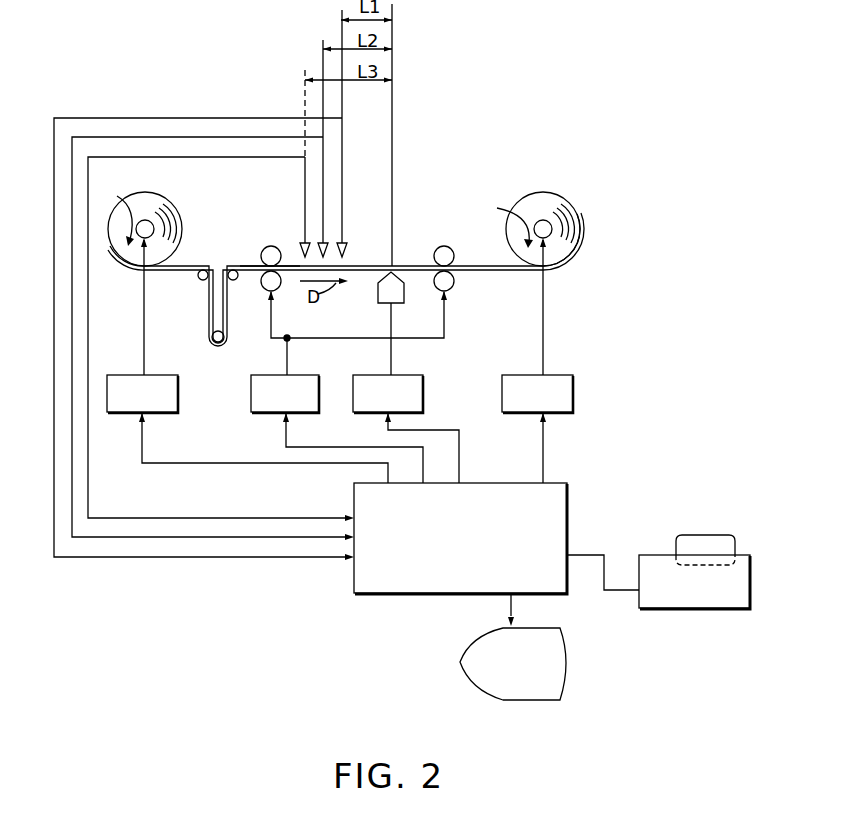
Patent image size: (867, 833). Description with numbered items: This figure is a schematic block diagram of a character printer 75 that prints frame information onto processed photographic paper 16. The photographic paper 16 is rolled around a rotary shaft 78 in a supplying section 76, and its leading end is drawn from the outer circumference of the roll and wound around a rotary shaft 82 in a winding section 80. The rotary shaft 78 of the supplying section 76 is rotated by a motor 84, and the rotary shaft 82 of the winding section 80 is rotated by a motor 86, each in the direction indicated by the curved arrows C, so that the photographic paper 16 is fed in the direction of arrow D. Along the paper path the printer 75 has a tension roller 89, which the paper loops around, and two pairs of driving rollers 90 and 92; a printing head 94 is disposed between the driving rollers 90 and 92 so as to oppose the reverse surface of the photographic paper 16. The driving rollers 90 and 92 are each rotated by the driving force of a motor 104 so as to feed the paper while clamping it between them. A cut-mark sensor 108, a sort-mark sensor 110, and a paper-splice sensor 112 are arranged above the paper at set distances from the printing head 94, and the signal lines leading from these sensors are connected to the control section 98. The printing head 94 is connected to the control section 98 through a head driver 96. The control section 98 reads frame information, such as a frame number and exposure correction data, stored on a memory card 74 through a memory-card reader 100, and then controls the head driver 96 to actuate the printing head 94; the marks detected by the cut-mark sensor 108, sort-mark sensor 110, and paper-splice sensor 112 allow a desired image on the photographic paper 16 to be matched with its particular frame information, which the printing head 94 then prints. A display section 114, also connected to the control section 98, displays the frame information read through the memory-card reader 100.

The printer 75 is at (174, 110).
The rotary shaft 78 is at (151, 224).
The supplying section 76 is at (110, 268).
The photographic paper 16 is at (240, 264).
The tension roller 89 is at (222, 345).
The driving rollers 90 is at (261, 244).
The driving rollers 92 is at (450, 245).
The cut-mark sensor 108 is at (300, 248).
The sort-mark sensor 110 is at (328, 247).
The paper-splice sensor 112 is at (347, 251).
The printing head 94 is at (378, 293).
The winding section 80 is at (548, 187).
The rotary shaft 82 is at (550, 224).
The motor 84 is at (176, 374).
The motor 104 is at (291, 375).
The head driver 96 is at (413, 375).
The motor 86 is at (555, 375).
The control section 98 is at (567, 495).
The display section 114 is at (472, 678).
The memory-card reader 100 is at (680, 609).
The memory card 74 is at (688, 535).